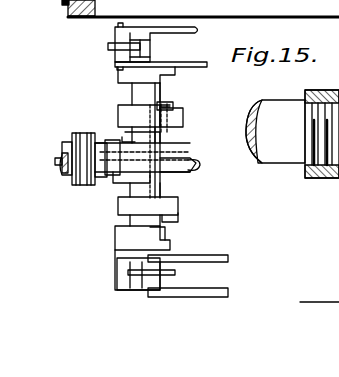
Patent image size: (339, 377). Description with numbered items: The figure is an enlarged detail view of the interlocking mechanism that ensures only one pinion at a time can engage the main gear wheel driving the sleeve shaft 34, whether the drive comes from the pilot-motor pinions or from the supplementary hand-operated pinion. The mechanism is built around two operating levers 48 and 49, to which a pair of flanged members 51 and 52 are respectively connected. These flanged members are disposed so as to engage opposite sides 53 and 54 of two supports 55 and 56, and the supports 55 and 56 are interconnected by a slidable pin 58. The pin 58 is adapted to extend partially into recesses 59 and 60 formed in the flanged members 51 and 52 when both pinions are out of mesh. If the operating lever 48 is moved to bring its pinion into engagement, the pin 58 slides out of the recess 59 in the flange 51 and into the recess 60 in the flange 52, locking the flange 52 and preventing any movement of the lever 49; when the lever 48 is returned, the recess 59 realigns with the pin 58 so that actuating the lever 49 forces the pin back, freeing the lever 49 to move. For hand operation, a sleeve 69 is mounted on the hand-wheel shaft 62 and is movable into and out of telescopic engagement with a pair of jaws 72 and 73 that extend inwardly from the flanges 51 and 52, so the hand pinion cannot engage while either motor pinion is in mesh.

The sleeve shaft 34 is at (188, 151).
The operating lever 48 is at (168, 274).
The operating lever 49 is at (157, 47).
The flanged member 51 is at (178, 225).
The flanged member 52 is at (175, 103).
The side of support 53 is at (179, 207).
The side of support 54 is at (184, 112).
The support 55 is at (125, 197).
The support 56 is at (118, 113).
The slidable pin 58 is at (161, 138).
The recess 59 is at (166, 226).
The recess 60 is at (167, 104).
The hand-wheel shaft 62 is at (60, 158).
The sleeve 69 is at (98, 184).
The jaw 72 is at (183, 171).
The jaw 73 is at (128, 136).